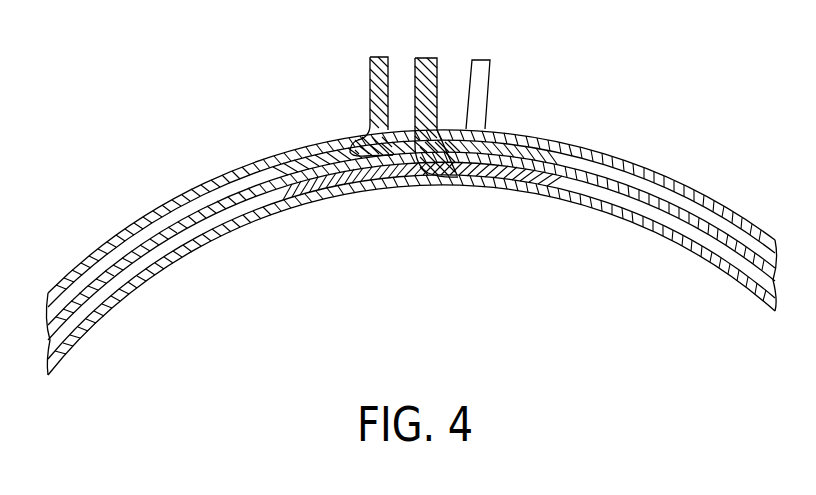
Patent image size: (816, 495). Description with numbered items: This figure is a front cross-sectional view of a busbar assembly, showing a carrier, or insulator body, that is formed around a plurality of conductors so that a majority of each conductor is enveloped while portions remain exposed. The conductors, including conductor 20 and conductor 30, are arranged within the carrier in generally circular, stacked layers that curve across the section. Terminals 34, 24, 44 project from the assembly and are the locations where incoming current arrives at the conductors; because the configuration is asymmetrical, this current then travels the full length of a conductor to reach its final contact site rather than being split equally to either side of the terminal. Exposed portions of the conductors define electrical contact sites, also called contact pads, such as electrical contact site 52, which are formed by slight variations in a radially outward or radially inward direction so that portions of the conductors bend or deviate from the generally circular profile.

The conductor 20 is at (443, 175).
The conductor 30 is at (176, 208).
The electrical contact site 52 is at (285, 213).
The terminal 34 is at (386, 58).
The terminal 24 is at (428, 58).
The terminal 44 is at (481, 72).